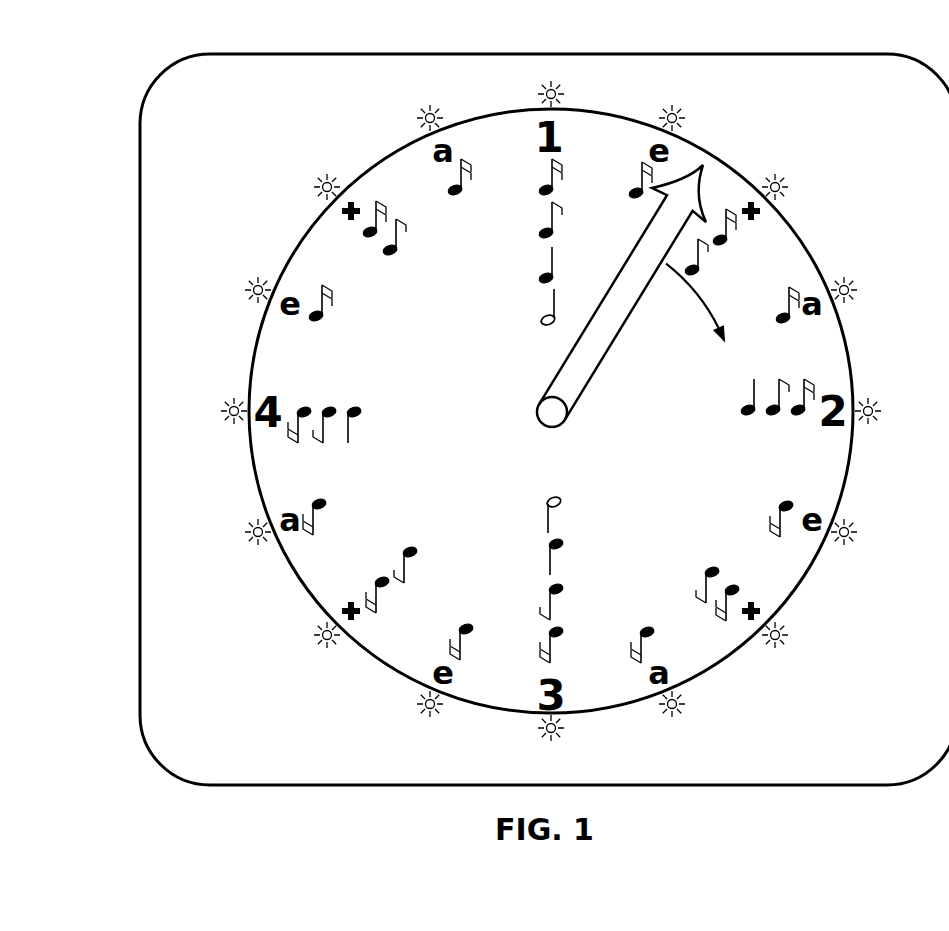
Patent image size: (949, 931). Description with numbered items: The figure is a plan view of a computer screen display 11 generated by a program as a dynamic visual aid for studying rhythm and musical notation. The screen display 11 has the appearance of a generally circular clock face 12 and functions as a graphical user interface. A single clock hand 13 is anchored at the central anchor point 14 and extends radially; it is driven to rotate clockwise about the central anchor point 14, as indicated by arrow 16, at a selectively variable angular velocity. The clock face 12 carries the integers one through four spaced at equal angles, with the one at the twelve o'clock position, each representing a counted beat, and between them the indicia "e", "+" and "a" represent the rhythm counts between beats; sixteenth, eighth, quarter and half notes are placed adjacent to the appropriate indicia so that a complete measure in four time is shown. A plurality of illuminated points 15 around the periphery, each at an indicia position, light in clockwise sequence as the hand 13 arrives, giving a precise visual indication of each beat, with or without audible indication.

The screen display 11 is at (145, 91).
The clock face 12 is at (253, 560).
The clock hand 13 is at (603, 332).
The central anchor point 14 is at (559, 417).
The illuminated points 15 is at (783, 182).
The arrow 16 is at (697, 300).